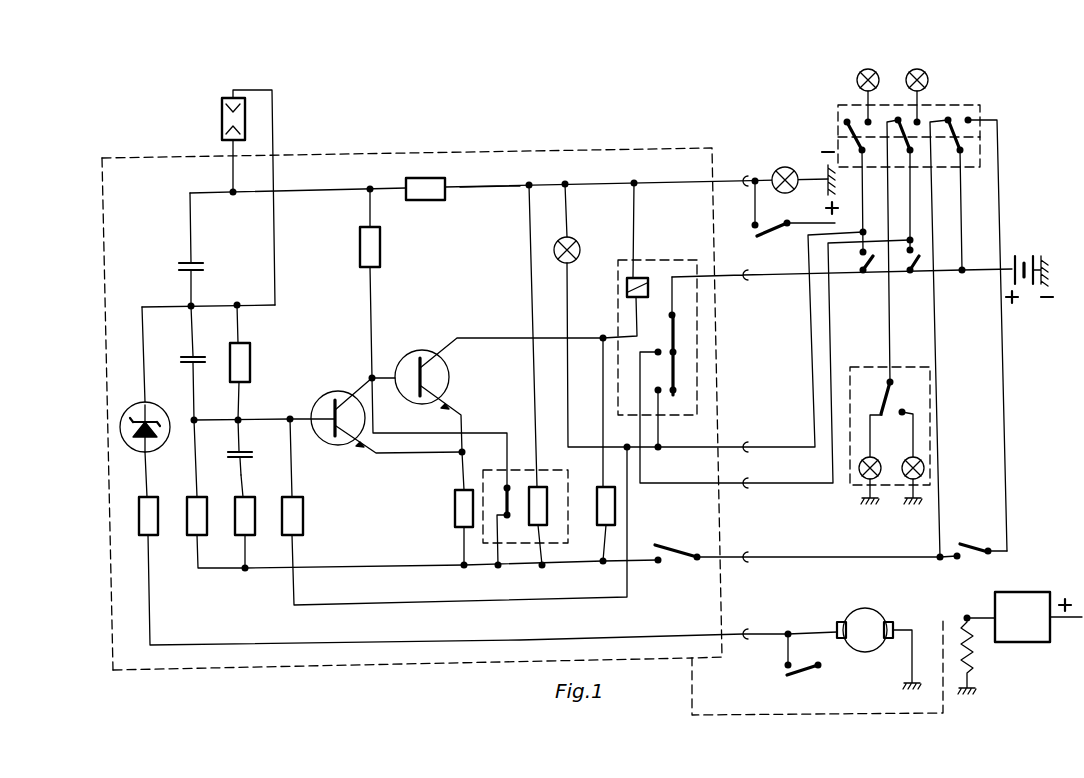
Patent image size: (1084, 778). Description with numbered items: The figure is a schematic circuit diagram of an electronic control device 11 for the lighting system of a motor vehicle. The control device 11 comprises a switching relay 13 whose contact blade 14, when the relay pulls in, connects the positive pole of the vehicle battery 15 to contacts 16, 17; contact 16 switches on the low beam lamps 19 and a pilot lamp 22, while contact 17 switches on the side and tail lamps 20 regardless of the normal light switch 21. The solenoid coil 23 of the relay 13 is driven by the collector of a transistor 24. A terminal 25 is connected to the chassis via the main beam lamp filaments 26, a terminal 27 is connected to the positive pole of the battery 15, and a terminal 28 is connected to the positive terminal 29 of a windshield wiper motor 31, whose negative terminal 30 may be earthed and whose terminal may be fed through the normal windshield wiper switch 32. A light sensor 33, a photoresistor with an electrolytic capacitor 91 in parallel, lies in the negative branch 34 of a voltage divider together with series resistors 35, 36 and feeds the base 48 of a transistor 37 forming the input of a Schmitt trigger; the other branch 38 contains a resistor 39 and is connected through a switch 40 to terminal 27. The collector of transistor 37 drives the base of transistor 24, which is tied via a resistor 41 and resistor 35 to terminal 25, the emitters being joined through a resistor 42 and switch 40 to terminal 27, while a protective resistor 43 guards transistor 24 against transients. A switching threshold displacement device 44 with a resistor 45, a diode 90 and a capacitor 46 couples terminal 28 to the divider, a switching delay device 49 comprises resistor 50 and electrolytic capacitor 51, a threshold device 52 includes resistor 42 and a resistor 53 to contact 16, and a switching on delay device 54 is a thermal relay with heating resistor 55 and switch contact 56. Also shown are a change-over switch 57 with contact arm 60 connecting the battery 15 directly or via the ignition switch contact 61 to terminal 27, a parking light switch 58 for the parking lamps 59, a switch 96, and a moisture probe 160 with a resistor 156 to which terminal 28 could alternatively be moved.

The electronic control device 11 is at (540, 150).
The switching relay 13 is at (660, 258).
The contact blade 14 is at (680, 322).
The vehicle battery 15 is at (1015, 256).
The contact 16 is at (657, 390).
The contact 17 is at (691, 403).
The low beam lamp 19 is at (857, 81).
The tail lamp 20 is at (928, 80).
The normal light switch 21 is at (916, 276).
The pilot lamp 22 is at (575, 240).
The solenoid coil 23 is at (628, 276).
The transistor 24 is at (426, 350).
The terminal 25 is at (737, 178).
The main beam lamp filaments 26 is at (785, 166).
The terminal 27 is at (750, 560).
The terminal 28 is at (745, 640).
The positive terminal 29 is at (840, 620).
The negative terminal 30 is at (895, 620).
The windshield wiper motor 31 is at (866, 610).
The windshield wiper switch 32 is at (808, 671).
The light sensor 33 is at (222, 116).
The negative branch 34 is at (492, 190).
The resistor 35 is at (432, 196).
The resistor 36 is at (251, 357).
The transistor 37 is at (338, 391).
The branch 38 is at (392, 565).
The resistor 39 is at (190, 528).
The switch 40 is at (678, 560).
The resistor 41 is at (360, 242).
The resistor 42 is at (455, 506).
The resistor 43 is at (598, 505).
The switching threshold displacement device 44 is at (134, 546).
The resistor 45 is at (140, 515).
The capacitor 46 is at (182, 357).
The base 48 is at (309, 412).
The switching delay device 49 is at (236, 497).
The resistor 50 is at (236, 517).
The electrolytic capacitor 51 is at (250, 454).
The threshold device 52 is at (416, 491).
The resistor 53 is at (303, 515).
The switching on delay device 54 is at (517, 470).
The heating resistor 55 is at (548, 510).
The switch contact 56 is at (515, 520).
The change-over switch 57 is at (980, 106).
The parking light switch 58 is at (875, 366).
The parking lamps 59 is at (905, 480).
The contact arm 60 is at (961, 155).
The ignition switch contact 61 is at (970, 555).
The diode 90 is at (135, 405).
The electrolytic capacitor 91 is at (180, 264).
The switch 96 is at (765, 235).
The resistor 156 is at (975, 658).
The moisture probe 160 is at (1005, 592).